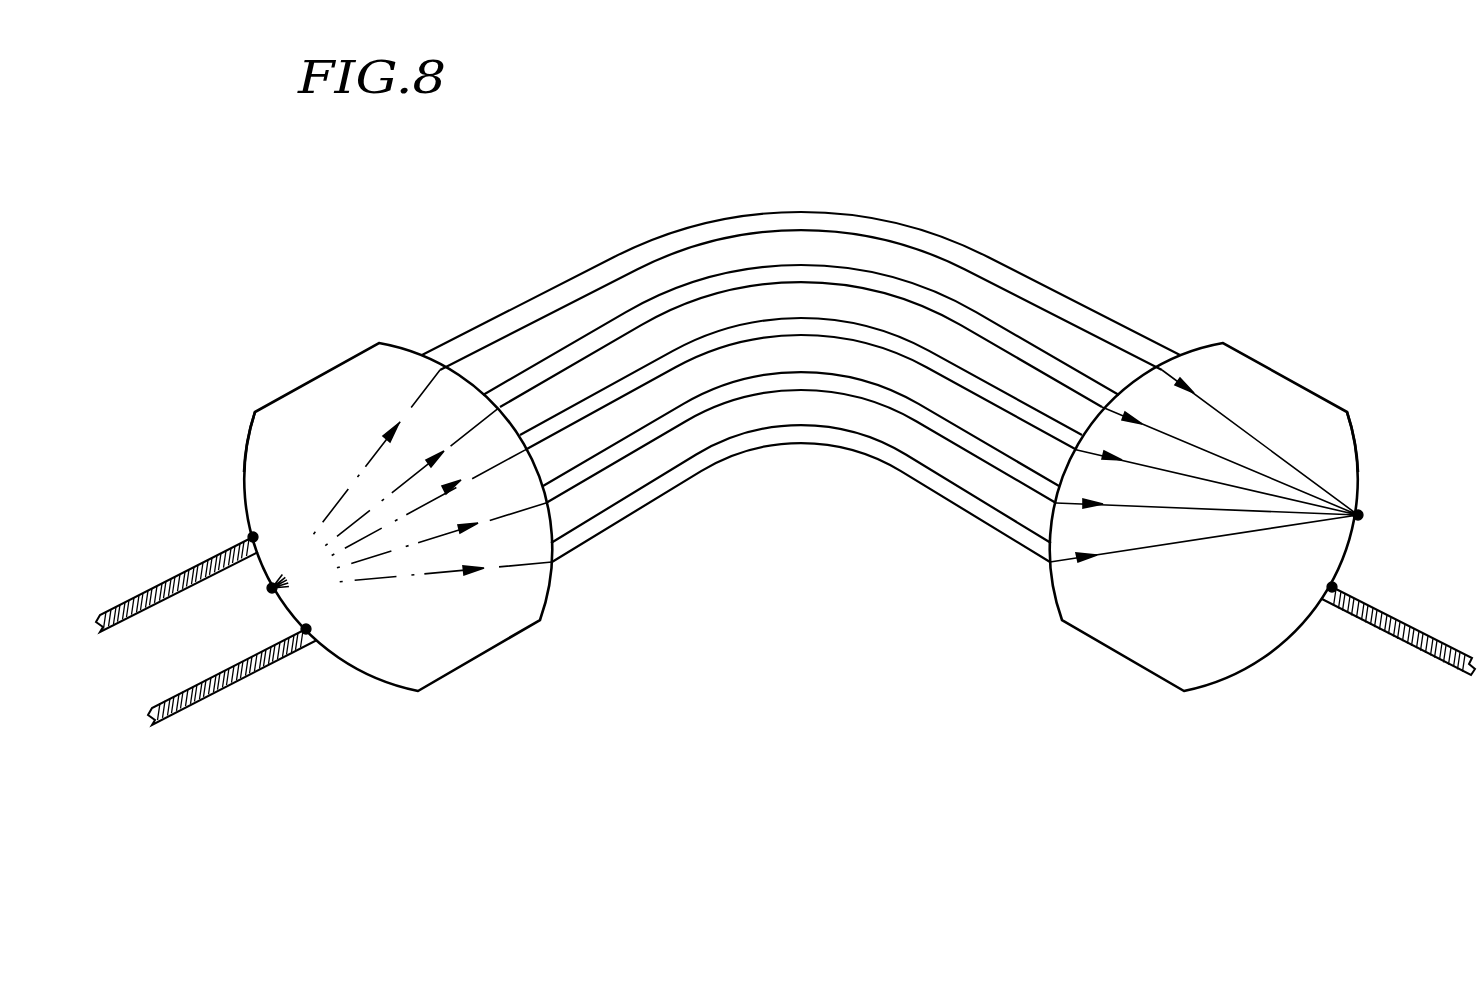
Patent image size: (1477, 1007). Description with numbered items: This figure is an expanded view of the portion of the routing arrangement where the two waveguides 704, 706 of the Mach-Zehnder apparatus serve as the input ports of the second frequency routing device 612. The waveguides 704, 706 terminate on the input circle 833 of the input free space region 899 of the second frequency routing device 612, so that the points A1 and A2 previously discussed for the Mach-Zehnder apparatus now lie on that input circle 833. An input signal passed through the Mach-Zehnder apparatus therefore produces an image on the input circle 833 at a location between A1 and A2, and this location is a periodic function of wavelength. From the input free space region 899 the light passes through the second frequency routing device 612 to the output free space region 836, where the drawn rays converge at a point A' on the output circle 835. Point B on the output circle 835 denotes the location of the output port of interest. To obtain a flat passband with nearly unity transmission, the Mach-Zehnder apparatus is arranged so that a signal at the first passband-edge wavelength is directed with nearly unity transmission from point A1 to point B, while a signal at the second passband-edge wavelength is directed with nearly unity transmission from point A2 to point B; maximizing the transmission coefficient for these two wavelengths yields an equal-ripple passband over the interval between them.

The second frequency routing device 612 is at (1148, 198).
The input lens 899 is at (316, 380).
The input circle 833 is at (241, 446).
The waveguide 704 is at (160, 580).
The waveguide 706 is at (226, 690).
The output free space region 836 is at (1289, 379).
The output circle 835 is at (1363, 448).
The point A1 is at (258, 533).
The point A2 is at (312, 628).
The point A' is at (1394, 522).
The point B is at (1333, 594).